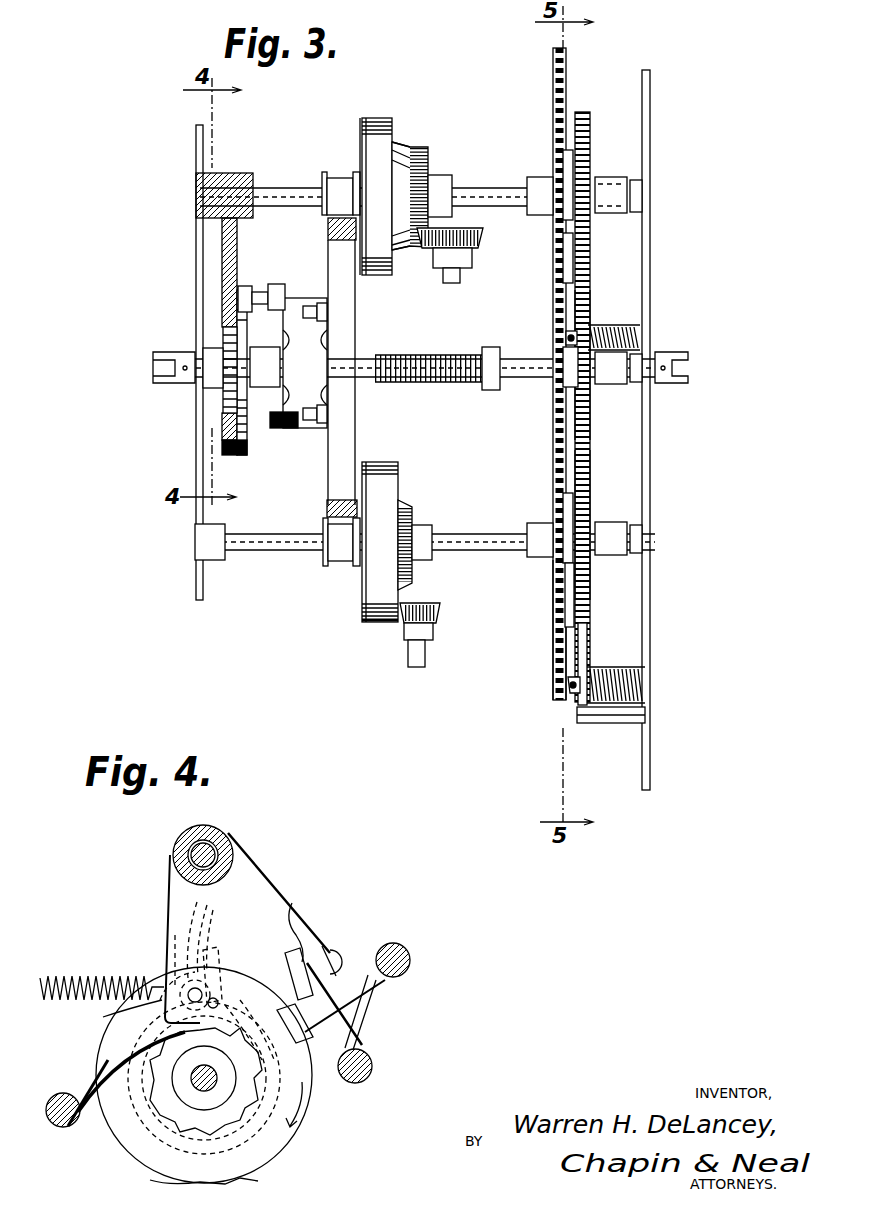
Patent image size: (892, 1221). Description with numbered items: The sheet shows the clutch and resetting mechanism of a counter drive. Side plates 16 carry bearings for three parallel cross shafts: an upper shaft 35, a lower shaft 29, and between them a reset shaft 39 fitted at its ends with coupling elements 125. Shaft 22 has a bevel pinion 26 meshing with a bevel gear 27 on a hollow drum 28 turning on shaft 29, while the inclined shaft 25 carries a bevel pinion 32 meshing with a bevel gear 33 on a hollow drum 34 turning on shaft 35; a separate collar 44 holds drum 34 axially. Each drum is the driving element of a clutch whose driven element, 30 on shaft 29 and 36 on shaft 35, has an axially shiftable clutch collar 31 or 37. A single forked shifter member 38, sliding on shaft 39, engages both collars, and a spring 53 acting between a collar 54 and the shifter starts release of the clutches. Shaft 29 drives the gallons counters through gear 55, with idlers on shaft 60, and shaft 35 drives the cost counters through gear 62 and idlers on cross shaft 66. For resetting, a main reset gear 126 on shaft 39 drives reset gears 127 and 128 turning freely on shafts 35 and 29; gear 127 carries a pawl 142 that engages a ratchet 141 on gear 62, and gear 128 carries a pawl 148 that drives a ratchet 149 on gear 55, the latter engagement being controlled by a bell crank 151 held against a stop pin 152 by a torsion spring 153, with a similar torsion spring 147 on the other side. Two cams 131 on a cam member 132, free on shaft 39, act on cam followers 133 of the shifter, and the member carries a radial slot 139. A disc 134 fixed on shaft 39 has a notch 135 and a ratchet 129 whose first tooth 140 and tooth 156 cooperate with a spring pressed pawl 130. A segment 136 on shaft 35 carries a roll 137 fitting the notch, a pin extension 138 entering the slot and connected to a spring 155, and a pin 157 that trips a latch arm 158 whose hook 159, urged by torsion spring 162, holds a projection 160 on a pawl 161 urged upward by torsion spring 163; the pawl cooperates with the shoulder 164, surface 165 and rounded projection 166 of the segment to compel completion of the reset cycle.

In FIG. 3, the side plates 16 is at (200, 578).
In FIG. 3, the shaft 22 is at (425, 654).
In FIG. 3, the inclined shaft 25 is at (458, 276).
In FIG. 3, the bevel pinion 26 is at (434, 608).
In FIG. 3, the bevel gear 27 is at (402, 568).
In FIG. 3, the hollow drum 28 is at (384, 622).
In FIG. 3, the cross shaft 29 is at (242, 550).
In FIG. 3, the clutch element 30 is at (362, 604).
In FIG. 3, the clutch collar 31 is at (328, 546).
In FIG. 3, the bevel pinion 32 is at (478, 236).
In FIG. 3, the bevel gear 33 is at (426, 158).
In FIG. 3, the hollow drum 34 is at (386, 118).
In FIG. 3, the cross shaft 35 is at (295, 170).
In FIG. 4, the cross shaft 35 is at (178, 845).
In FIG. 3, the clutch element 36 is at (362, 124).
In FIG. 3, the clutch collar 37 is at (337, 152).
In FIG. 3, the shifter member 38 is at (350, 310).
In FIG. 3, the shaft 39 is at (532, 382).
In FIG. 4, the shaft 39 is at (203, 1092).
In FIG. 3, the collar 44 is at (448, 176).
In FIG. 3, the spring 53 is at (432, 338).
In FIG. 3, the collar 54 is at (492, 348).
In FIG. 3, the gear 55 is at (560, 651).
In FIG. 3, the shaft 60 is at (580, 688).
In FIG. 3, the gear 62 is at (553, 55).
In FIG. 3, the cross shaft 66 is at (565, 338).
In FIG. 3, the coupling elements 125 is at (166, 350).
In FIG. 3, the main reset gear 126 is at (588, 283).
In FIG. 3, the reset gear 127 is at (585, 225).
In FIG. 3, the reset gear 128 is at (589, 476).
In FIG. 3, the ratchet 129 is at (230, 400).
In FIG. 4, the ratchet 129 is at (200, 1100).
In FIG. 4, the pawl 130 is at (122, 1056).
In FIG. 3, the cams 131 is at (370, 402).
In FIG. 3, the cam member 132 is at (274, 426).
In FIG. 4, the cam member 132 is at (250, 1134).
In FIG. 3, the cam followers 133 is at (310, 306).
In FIG. 3, the disc 134 is at (242, 457).
In FIG. 4, the disc 134 is at (312, 1112).
In FIG. 3, the notch 135 is at (224, 314).
In FIG. 4, the notch 135 is at (158, 988).
In FIG. 3, the segment 136 is at (225, 243).
In FIG. 4, the segment 136 is at (252, 875).
In FIG. 3, the roll 137 is at (240, 287).
In FIG. 4, the roll 137 is at (198, 944).
In FIG. 3, the pin extension 138 is at (275, 286).
In FIG. 4, the pin extension 138 is at (193, 935).
In FIG. 4, the radial slot 139 is at (176, 948).
In FIG. 4, the first tooth 140 is at (160, 1092).
In FIG. 3, the ratchet 141 is at (568, 148).
In FIG. 3, the pawl 142 is at (566, 262).
In FIG. 3, the torsion spring 147 is at (636, 328).
In FIG. 3, the pawl 148 is at (575, 602).
In FIG. 3, the ratchet 149 is at (566, 500).
In FIG. 3, the bell crank 151 is at (586, 640).
In FIG. 3, the stop pin 152 is at (597, 723).
In FIG. 3, the torsion spring 153 is at (627, 670).
In FIG. 4, the spring 155 is at (78, 980).
In FIG. 4, the tooth 156 is at (111, 1016).
In FIG. 4, the pin 157 is at (217, 975).
In FIG. 4, the latch arm 158 is at (313, 922).
In FIG. 4, the hook 159 is at (320, 938).
In FIG. 4, the projection 160 is at (353, 1083).
In FIG. 4, the pawl 161 is at (378, 980).
In FIG. 4, the torsion spring 162 is at (355, 1018).
In FIG. 4, the torsion spring 163 is at (367, 955).
In FIG. 4, the shoulder 164 is at (222, 1000).
In FIG. 4, the surface 165 is at (276, 1063).
In FIG. 4, the rounded projection 166 is at (330, 948).